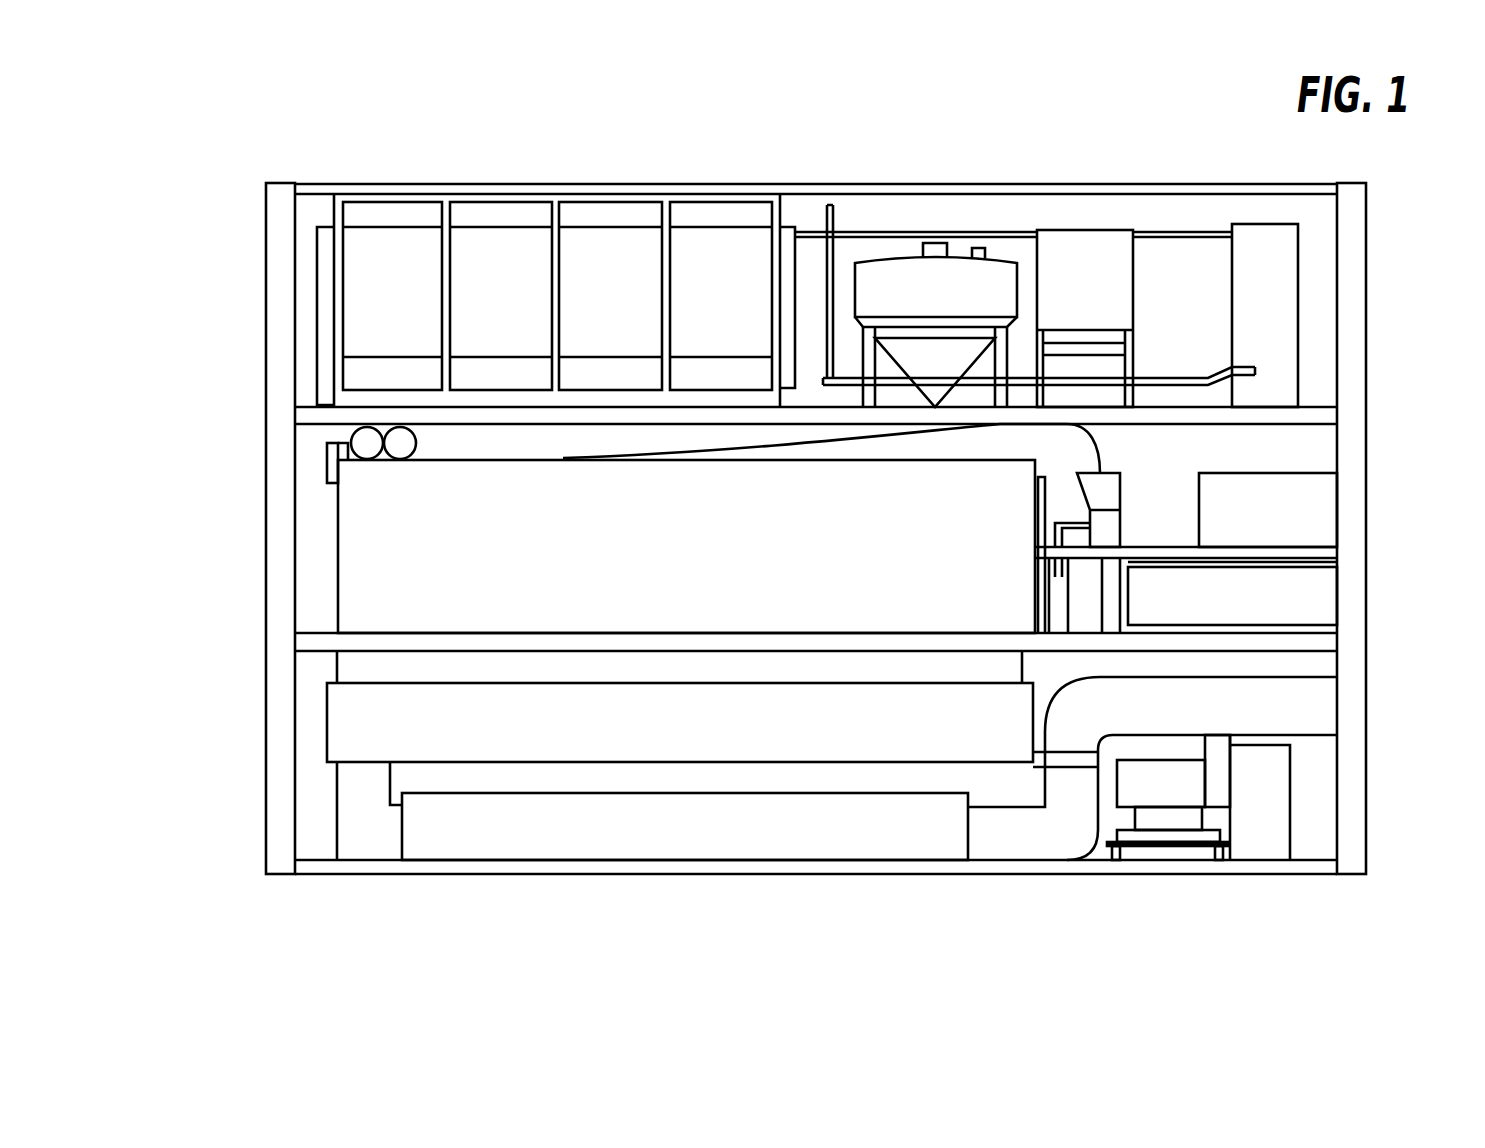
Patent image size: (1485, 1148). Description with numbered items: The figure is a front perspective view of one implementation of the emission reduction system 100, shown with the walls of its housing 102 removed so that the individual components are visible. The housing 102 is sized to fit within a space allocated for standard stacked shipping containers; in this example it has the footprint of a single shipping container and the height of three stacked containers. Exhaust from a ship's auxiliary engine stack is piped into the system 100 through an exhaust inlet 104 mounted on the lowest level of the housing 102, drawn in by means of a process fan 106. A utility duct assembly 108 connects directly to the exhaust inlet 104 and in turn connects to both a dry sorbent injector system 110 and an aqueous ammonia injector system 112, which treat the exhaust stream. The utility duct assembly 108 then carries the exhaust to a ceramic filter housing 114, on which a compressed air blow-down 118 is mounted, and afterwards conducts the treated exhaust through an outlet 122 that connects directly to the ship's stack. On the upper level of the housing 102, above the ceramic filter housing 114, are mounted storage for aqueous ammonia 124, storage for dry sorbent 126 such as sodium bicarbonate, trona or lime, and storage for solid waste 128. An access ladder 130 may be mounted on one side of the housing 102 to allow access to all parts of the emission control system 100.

The emission reduction system 100 is at (186, 168).
The housing 102 is at (280, 403).
The exhaust inlet 104 is at (1307, 702).
The process fan 106 is at (1175, 782).
The utility duct assembly 108 is at (993, 833).
The dry sorbent injector system 110 is at (1107, 490).
The aqueous ammonia injector system 112 is at (1292, 507).
The ceramic filter housing 114 is at (380, 574).
The compressed air blow-down 118 is at (327, 457).
The outlet 122 is at (1312, 600).
The storage for aqueous ammonia 124 is at (482, 247).
The dry sorbent storage 126 is at (1082, 252).
The solid waste storage 128 is at (953, 275).
The access ladder 130 is at (1273, 256).